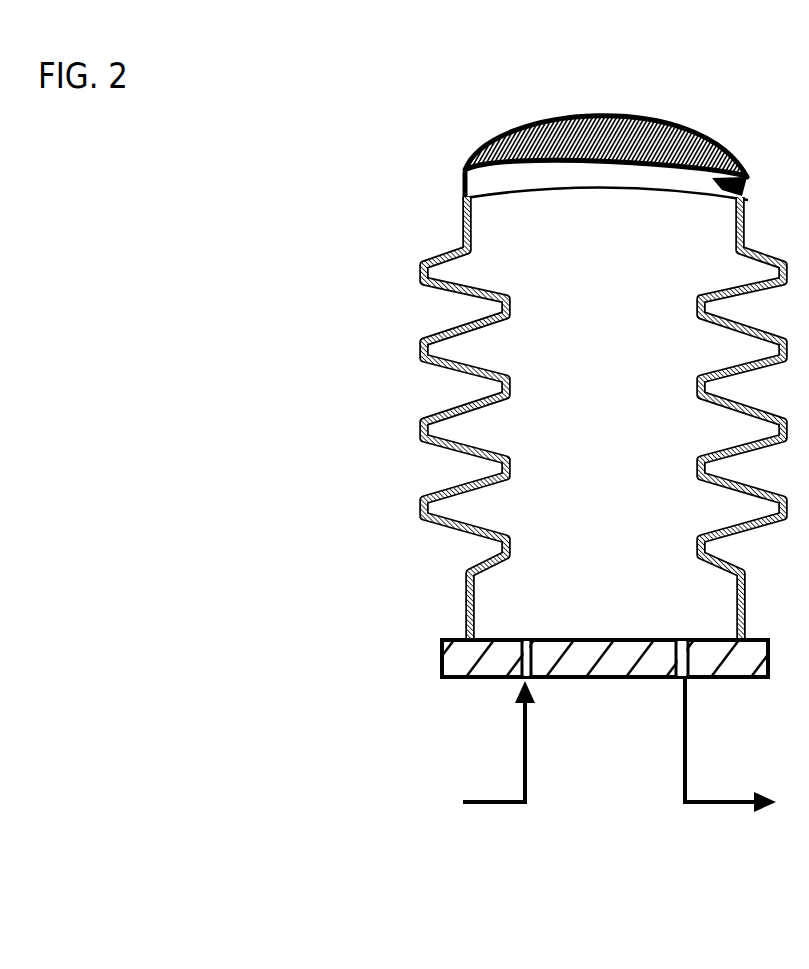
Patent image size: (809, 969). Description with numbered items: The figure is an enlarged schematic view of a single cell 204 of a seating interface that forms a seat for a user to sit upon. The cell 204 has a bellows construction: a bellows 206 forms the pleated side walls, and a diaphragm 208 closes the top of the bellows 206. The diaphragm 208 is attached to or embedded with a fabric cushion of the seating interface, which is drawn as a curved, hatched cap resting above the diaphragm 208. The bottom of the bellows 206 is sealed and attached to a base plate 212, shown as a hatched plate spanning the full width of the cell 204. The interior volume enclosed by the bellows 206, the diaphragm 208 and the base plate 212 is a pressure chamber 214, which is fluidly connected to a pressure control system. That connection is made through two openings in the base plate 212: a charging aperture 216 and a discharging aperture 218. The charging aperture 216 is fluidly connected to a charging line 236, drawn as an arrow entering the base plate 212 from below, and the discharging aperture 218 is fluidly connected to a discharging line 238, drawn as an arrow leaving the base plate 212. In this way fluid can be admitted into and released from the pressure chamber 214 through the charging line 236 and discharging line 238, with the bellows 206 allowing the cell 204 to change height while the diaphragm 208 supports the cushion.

The cell 204 is at (297, 184).
The diaphragm 208 is at (522, 188).
The bellows 206 is at (430, 357).
The pressure chamber 214 is at (623, 413).
The base plate 212 is at (445, 650).
The charging aperture 216 is at (527, 630).
The discharging aperture 218 is at (669, 624).
The charging line 236 is at (498, 802).
The discharging line 238 is at (700, 803).